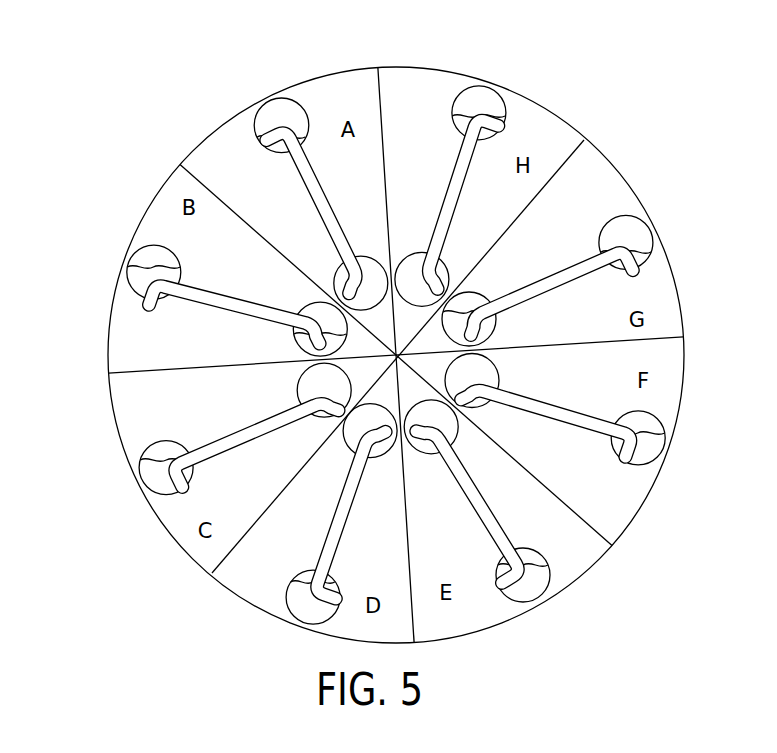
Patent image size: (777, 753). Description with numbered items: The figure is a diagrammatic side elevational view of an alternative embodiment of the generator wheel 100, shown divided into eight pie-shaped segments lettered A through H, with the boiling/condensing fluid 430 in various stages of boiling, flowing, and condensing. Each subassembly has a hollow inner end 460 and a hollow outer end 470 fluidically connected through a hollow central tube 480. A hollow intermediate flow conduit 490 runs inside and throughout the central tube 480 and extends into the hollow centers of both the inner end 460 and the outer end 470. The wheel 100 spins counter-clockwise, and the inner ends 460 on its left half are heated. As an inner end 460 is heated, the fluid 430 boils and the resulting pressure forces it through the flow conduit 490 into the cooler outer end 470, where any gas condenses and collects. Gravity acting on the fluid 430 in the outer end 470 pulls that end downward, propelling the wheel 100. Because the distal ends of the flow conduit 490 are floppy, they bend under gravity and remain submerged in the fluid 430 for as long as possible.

The generator wheel 100 is at (693, 170).
The fluid 430 is at (613, 464).
The inner end 460 is at (322, 340).
The outer end 470 is at (657, 238).
The central tube 480 is at (307, 201).
The flow conduit 490 is at (467, 113).